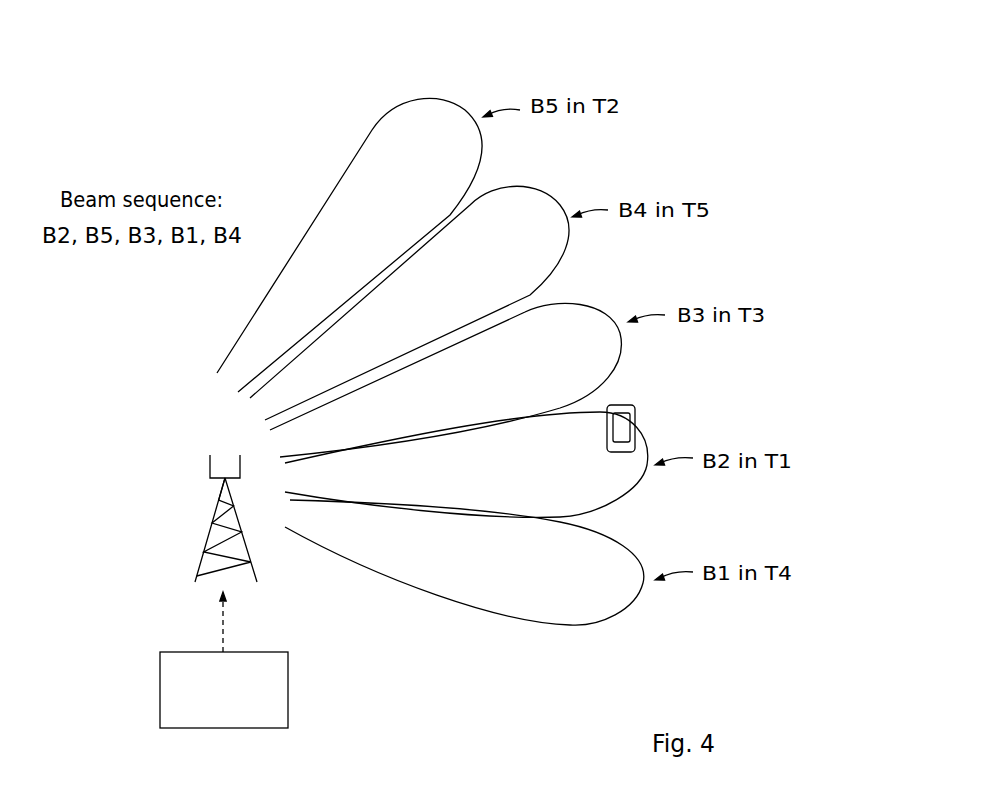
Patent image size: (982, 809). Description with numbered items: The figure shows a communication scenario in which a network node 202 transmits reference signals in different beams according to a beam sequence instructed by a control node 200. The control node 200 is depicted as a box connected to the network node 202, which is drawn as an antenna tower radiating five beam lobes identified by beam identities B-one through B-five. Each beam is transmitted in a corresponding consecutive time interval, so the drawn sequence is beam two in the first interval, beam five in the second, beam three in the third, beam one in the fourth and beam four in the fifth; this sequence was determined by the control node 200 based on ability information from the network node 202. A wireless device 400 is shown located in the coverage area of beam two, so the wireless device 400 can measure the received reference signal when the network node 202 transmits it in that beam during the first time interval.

The control node 200 is at (160, 680).
The network node 202 is at (197, 505).
The wireless device 400 is at (637, 422).